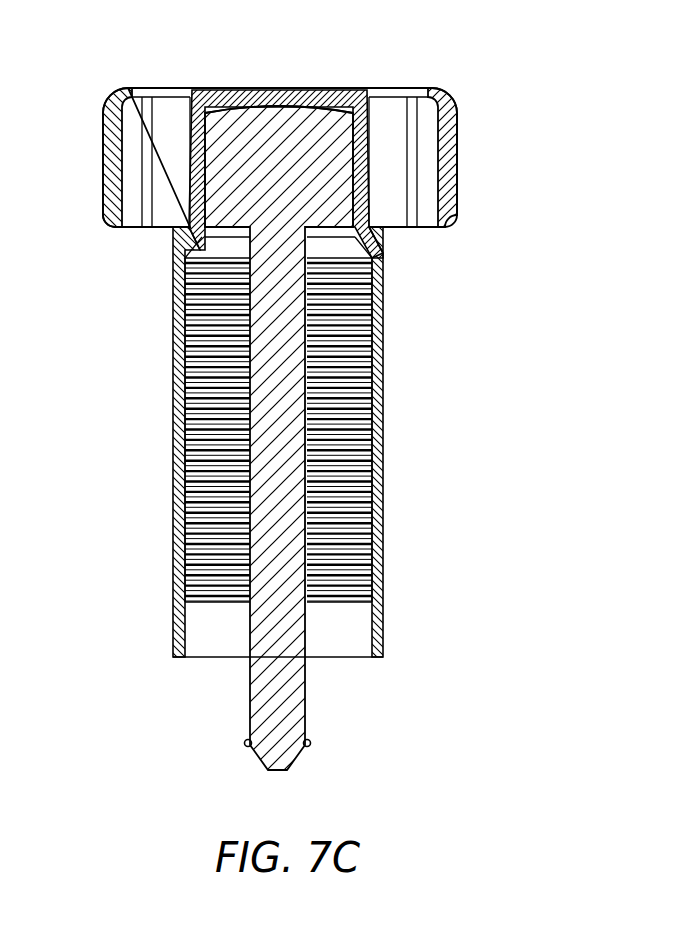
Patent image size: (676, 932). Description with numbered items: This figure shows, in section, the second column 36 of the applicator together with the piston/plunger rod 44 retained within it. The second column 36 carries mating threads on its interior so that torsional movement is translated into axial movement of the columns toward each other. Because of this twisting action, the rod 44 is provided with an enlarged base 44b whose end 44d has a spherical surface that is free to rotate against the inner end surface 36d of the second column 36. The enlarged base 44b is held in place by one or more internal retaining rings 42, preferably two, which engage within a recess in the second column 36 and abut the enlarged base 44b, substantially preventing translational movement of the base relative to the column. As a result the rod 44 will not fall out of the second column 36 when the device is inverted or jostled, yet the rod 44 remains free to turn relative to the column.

The second column 36 is at (405, 376).
The inner end surface of the second column 36d is at (223, 90).
The internal retaining ring 42 is at (195, 231).
The piston/plunger rod 44 is at (316, 389).
The enlarged base of the piston/plunger rod 44b is at (288, 153).
The end of the enlarged base having a spherical surface 44d is at (289, 107).